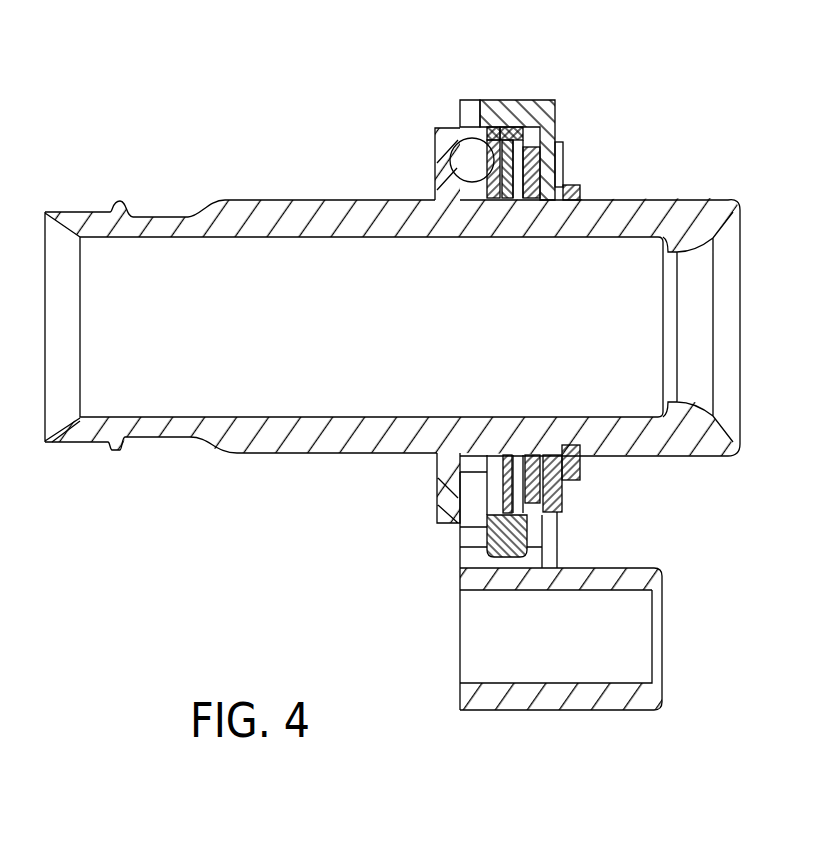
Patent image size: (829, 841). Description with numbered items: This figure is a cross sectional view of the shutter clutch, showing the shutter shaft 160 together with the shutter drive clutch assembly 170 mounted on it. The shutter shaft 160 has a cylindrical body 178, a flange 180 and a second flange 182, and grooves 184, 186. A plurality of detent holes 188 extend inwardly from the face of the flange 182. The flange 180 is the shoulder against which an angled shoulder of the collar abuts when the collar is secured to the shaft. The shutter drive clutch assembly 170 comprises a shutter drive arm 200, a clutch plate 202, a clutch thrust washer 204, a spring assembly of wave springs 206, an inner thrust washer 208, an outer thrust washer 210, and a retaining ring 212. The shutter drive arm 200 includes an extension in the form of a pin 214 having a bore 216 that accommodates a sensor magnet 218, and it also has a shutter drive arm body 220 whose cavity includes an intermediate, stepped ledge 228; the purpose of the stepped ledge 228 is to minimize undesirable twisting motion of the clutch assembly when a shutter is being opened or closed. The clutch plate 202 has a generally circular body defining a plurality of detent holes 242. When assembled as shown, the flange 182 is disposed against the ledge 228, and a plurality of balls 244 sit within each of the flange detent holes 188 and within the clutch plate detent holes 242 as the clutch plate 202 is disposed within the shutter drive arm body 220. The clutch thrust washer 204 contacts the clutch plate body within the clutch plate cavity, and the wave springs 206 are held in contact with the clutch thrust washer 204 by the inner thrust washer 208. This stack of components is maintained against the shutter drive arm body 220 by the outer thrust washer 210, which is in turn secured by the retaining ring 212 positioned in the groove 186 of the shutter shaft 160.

The shutter shaft 160 is at (245, 461).
The shutter drive clutch assembly 170 is at (541, 104).
The cylindrical body 178 is at (350, 455).
The flange 180 is at (117, 206).
The flange 182 is at (450, 126).
The groove 184 is at (194, 212).
The groove 186 is at (596, 191).
The detent holes 188 is at (455, 140).
The shutter drive arm 200 is at (456, 706).
The clutch plate 202 is at (483, 575).
The clutch thrust washer 204 is at (487, 541).
The wave springs 206 is at (528, 135).
The inner thrust washer 208 is at (538, 135).
The outer thrust washer 210 is at (580, 502).
The retaining ring 212 is at (597, 464).
The pin 214 is at (621, 712).
The bore 216 is at (630, 682).
The sensor magnet 218 is at (455, 629).
The shutter drive arm body 220 is at (556, 130).
The stepped ledge 228 is at (487, 127).
The detent holes 242 is at (512, 126).
The balls 244 is at (458, 162).